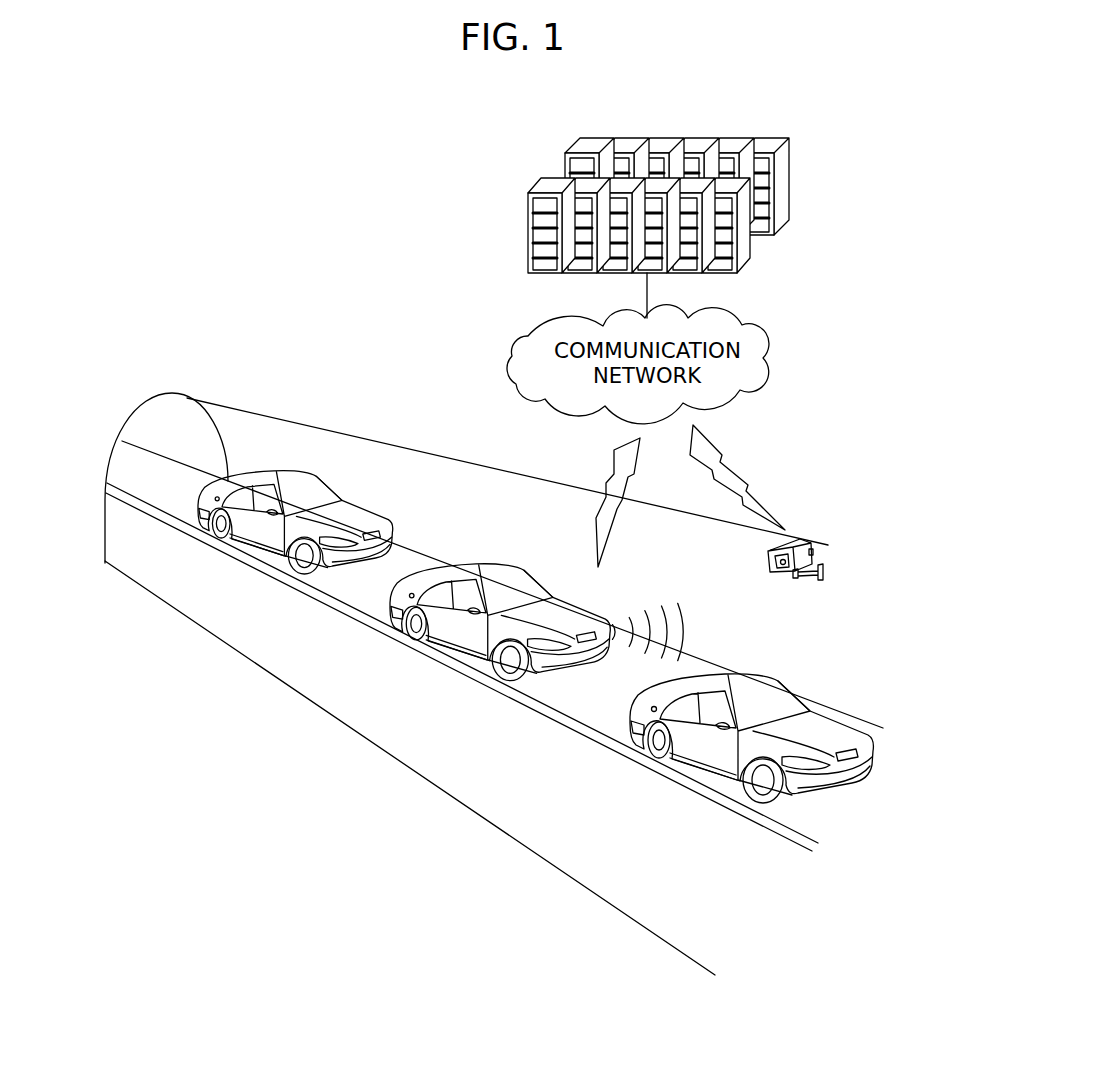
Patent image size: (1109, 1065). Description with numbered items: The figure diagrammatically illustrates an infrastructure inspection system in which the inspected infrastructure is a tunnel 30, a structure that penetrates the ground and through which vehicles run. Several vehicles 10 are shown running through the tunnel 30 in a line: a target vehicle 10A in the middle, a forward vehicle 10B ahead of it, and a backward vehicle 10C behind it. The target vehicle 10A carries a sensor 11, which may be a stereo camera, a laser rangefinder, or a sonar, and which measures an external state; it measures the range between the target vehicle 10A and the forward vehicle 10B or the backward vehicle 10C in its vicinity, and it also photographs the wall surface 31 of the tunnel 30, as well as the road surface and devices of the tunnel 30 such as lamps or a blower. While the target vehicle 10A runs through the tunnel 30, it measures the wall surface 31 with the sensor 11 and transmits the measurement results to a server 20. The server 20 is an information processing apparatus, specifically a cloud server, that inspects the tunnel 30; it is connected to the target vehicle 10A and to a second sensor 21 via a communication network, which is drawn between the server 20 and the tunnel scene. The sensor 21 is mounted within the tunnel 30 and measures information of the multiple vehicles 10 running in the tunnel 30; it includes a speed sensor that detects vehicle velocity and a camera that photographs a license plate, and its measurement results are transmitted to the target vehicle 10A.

The vehicles 10 is at (535, 626).
The target vehicle 10A is at (503, 553).
The forward vehicle 10B is at (751, 728).
The backward vehicle 10C is at (294, 478).
The sensor 11 is at (588, 615).
The server 20 is at (786, 158).
The sensor 21 is at (806, 546).
The tunnel 30 is at (248, 411).
The wall surface 31 is at (735, 617).